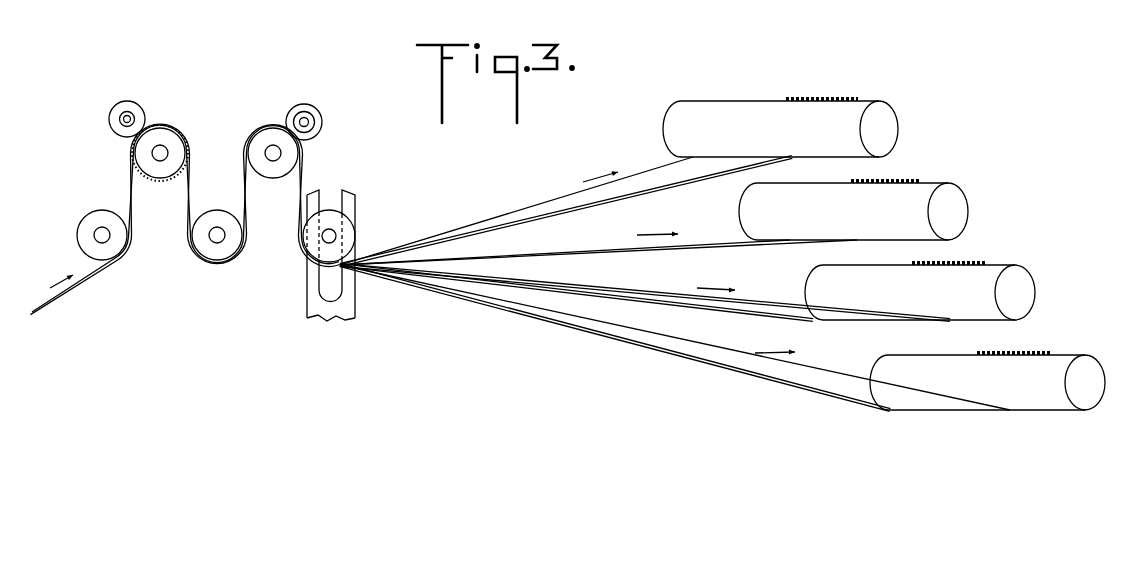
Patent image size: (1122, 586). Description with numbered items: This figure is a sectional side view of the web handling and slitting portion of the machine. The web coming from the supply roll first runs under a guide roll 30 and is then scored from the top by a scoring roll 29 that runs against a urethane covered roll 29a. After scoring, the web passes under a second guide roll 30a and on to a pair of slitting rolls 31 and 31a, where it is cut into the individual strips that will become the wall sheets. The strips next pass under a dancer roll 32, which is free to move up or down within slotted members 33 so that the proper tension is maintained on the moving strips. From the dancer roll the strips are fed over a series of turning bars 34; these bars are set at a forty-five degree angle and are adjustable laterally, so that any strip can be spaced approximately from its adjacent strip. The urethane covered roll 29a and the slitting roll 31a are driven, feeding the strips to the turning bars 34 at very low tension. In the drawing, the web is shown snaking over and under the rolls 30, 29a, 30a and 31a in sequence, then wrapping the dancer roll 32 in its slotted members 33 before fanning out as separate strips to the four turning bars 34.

The scoring roll 29 is at (131, 105).
The urethane covered roll 29a is at (158, 170).
The guide roll 30 is at (92, 218).
The guide roll 30a is at (213, 253).
The slitting roll 31 is at (317, 111).
The slitting roll 31a is at (272, 172).
The dancer roll 32 is at (333, 220).
The slotted members 33 is at (313, 288).
The turning bars 34 is at (735, 117).